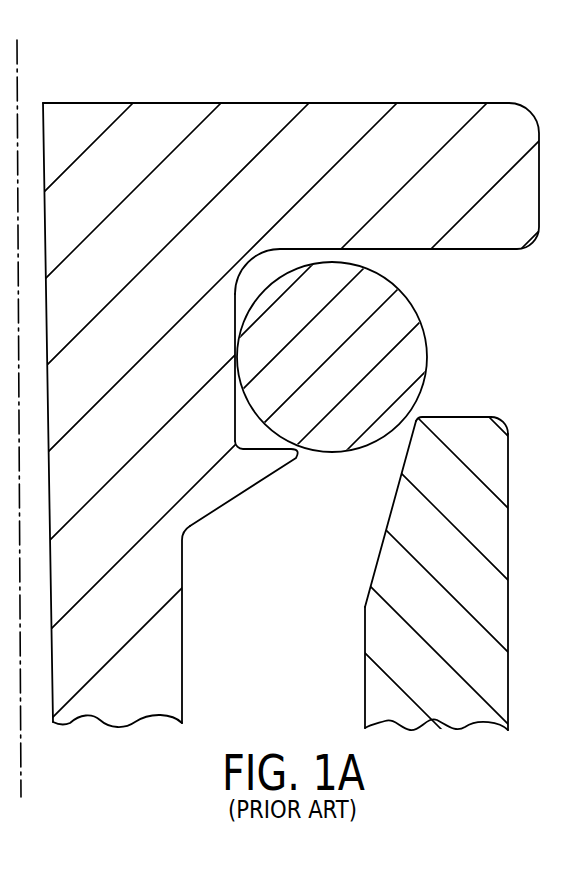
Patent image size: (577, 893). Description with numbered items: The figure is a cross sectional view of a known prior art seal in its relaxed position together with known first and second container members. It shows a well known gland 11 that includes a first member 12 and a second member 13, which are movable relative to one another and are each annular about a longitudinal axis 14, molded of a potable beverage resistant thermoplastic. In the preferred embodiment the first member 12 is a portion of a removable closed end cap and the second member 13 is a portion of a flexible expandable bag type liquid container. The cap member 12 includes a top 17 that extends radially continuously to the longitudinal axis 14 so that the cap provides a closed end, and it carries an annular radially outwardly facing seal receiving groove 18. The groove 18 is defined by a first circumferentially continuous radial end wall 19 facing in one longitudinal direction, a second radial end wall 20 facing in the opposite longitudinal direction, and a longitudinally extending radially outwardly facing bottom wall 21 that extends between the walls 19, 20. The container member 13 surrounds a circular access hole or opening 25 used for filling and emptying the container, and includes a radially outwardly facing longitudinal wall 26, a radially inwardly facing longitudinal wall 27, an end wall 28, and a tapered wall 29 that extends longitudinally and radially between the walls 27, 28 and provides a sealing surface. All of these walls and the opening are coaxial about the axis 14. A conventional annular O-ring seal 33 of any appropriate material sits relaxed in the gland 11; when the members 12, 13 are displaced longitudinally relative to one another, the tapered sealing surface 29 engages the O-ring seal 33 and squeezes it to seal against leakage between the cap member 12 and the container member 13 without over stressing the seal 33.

The gland 11 is at (288, 390).
The first member 12 is at (246, 143).
The second member 13 is at (344, 549).
The longitudinal axis 14 is at (18, 82).
The top 17 is at (417, 132).
The seal receiving groove 18 is at (272, 268).
The first radial end wall 19 is at (408, 249).
The second radial end wall 20 is at (271, 449).
The bottom wall 21 is at (236, 296).
The access hole or opening 25 is at (297, 638).
The radially outwardly facing longitudinal wall 26 is at (509, 599).
The radially inwardly facing longitudinal wall 27 is at (365, 705).
The end wall 28 is at (467, 417).
The tapered wall 29 is at (390, 512).
The O-ring seal 33 is at (336, 349).